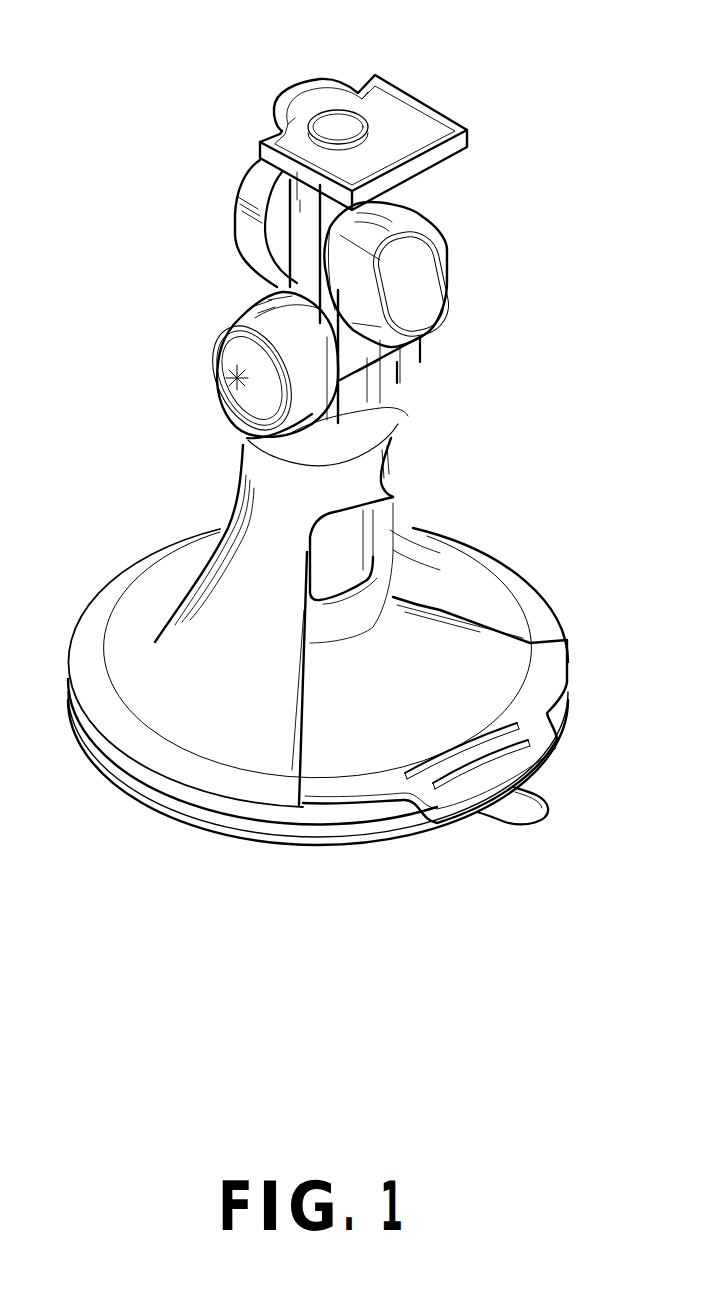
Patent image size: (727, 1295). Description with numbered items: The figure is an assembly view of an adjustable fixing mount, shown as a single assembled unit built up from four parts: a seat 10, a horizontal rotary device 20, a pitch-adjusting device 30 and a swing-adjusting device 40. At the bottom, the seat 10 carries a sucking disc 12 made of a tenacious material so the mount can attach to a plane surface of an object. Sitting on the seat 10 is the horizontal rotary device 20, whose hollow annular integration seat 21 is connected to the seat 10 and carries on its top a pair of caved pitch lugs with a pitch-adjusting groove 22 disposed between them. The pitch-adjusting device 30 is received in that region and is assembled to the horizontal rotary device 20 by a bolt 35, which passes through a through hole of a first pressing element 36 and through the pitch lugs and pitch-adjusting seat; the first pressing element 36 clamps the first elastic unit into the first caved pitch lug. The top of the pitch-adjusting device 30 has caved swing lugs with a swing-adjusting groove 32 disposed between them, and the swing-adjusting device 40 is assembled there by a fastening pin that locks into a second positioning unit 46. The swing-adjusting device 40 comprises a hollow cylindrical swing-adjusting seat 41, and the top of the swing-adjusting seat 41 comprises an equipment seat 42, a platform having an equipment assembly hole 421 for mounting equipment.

The seat 10 is at (462, 539).
The sucking disc 12 is at (277, 827).
The horizontal rotary device 20 is at (197, 386).
The integration seat 21 is at (373, 433).
The pitch-adjusting groove 22 is at (367, 383).
The pitch-adjusting device 30 is at (370, 281).
The swing-adjusting groove 32 is at (297, 282).
The bolt 35 is at (230, 348).
The first pressing element 36 is at (240, 410).
The swing-adjusting device 40 is at (384, 106).
The swing-adjusting seat 41 is at (300, 190).
The equipment seat 42 is at (400, 118).
The equipment assembly hole 421 is at (347, 123).
The second positioning unit 46 is at (430, 280).